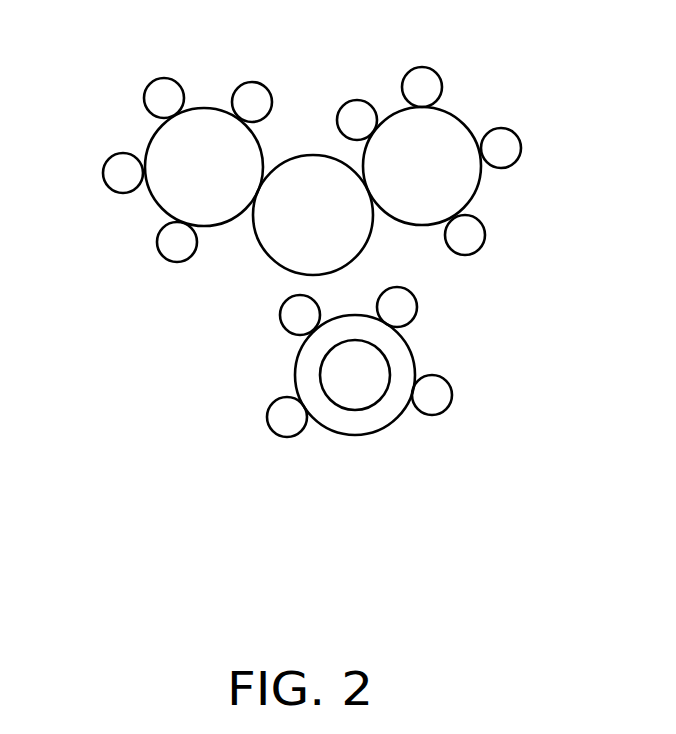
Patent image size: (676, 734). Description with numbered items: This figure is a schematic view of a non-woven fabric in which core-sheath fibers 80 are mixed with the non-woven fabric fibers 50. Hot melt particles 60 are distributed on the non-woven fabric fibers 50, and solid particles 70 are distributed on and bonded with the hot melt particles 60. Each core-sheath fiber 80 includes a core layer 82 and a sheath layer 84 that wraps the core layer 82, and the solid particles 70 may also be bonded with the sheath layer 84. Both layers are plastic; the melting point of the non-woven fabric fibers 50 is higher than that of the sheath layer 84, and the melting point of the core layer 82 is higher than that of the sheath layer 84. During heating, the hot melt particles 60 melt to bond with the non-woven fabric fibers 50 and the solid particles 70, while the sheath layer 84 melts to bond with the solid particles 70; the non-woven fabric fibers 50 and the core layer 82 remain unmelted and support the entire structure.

The non-woven fabric fiber 50 is at (345, 225).
The hot melt particle 60 is at (173, 160).
The solid particle 70 is at (250, 97).
The core-sheath fiber 80 is at (371, 440).
The core layer 82 is at (353, 380).
The sheath layer 84 is at (390, 405).